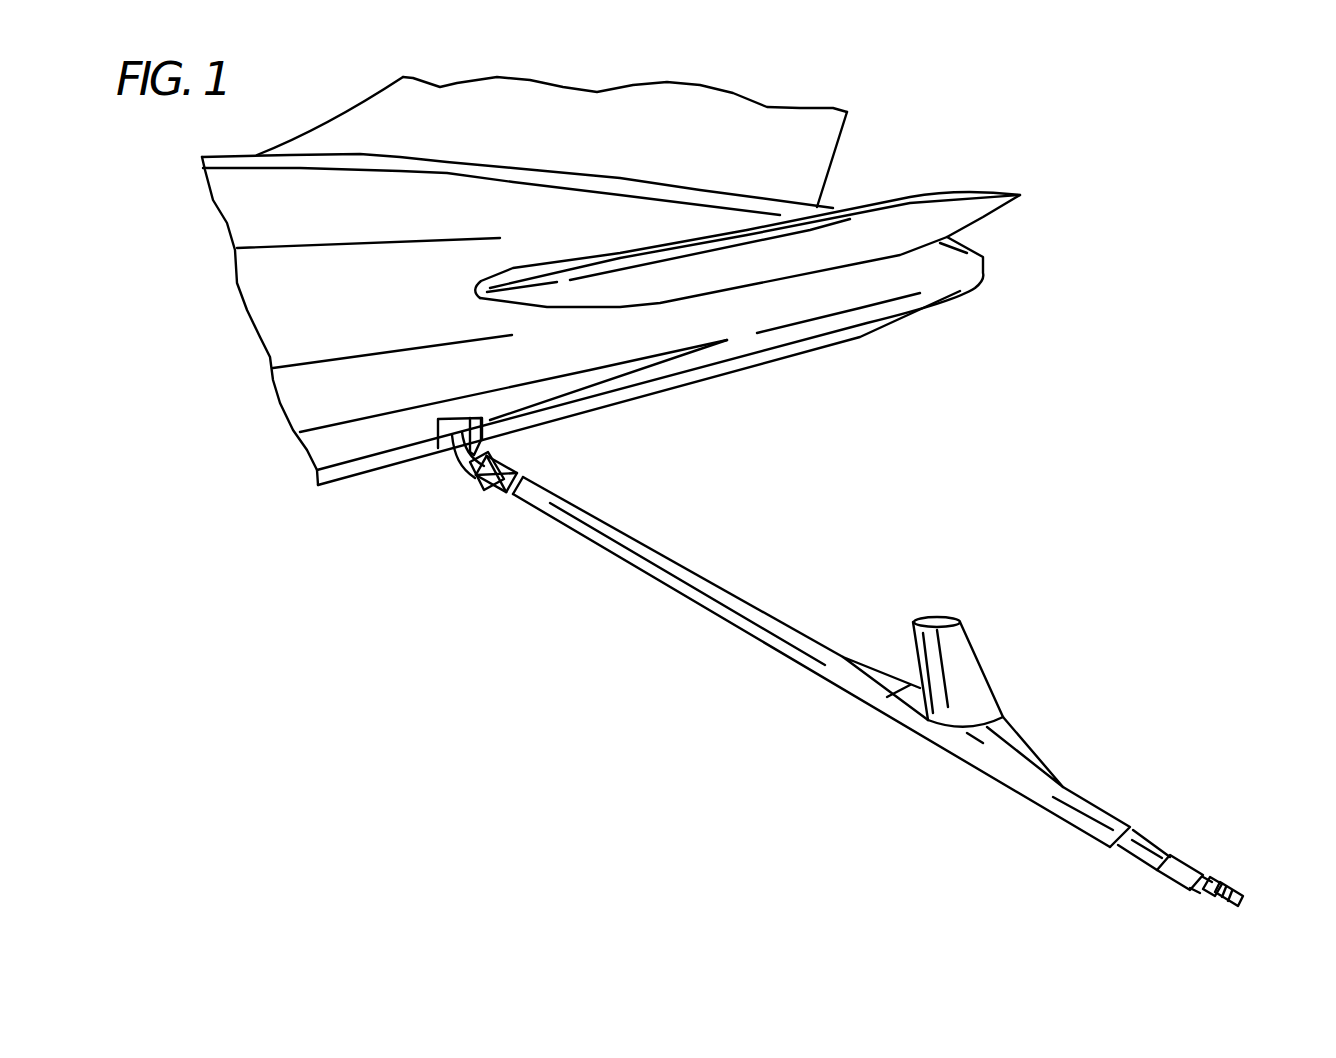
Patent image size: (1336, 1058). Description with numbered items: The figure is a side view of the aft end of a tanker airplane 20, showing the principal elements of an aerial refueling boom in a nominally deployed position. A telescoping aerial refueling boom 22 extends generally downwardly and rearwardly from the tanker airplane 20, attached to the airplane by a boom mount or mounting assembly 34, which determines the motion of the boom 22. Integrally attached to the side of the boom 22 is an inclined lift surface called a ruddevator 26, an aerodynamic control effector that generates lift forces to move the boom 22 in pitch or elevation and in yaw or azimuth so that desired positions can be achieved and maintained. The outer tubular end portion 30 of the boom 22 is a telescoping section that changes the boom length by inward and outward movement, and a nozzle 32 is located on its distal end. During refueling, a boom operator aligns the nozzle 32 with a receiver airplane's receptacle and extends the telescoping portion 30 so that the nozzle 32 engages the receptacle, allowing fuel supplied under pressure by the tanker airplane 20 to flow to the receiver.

The tanker airplane 20 is at (780, 404).
The telescoping aerial refueling boom 22 is at (677, 565).
The ruddevator 26 is at (977, 655).
The outer tubular end portion 30 is at (1147, 837).
The nozzle 32 is at (1217, 877).
The boom mounting assembly 34 is at (445, 484).